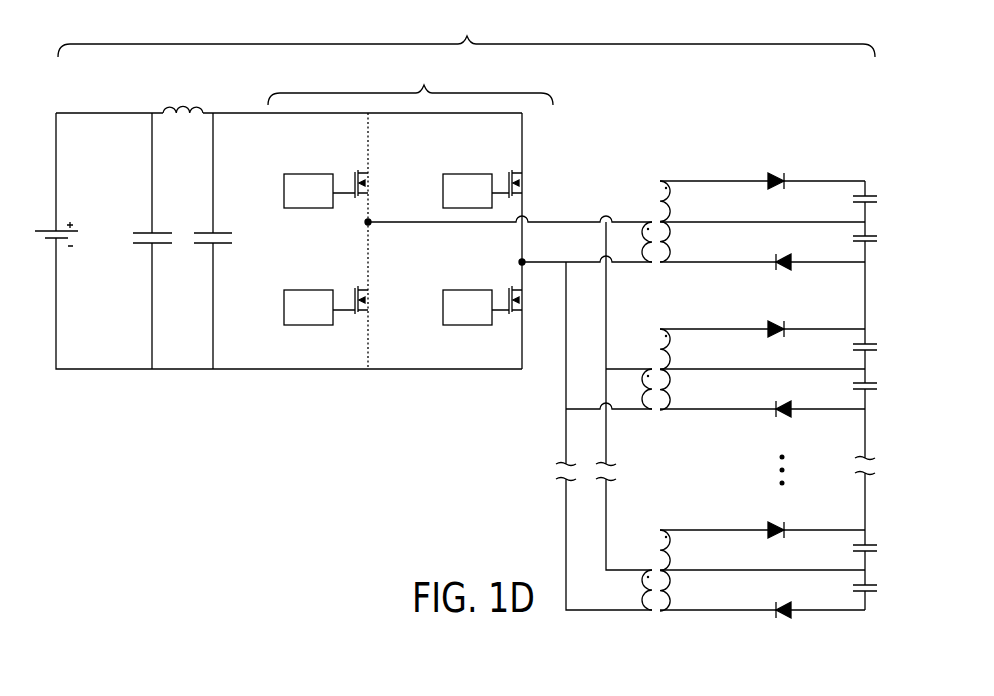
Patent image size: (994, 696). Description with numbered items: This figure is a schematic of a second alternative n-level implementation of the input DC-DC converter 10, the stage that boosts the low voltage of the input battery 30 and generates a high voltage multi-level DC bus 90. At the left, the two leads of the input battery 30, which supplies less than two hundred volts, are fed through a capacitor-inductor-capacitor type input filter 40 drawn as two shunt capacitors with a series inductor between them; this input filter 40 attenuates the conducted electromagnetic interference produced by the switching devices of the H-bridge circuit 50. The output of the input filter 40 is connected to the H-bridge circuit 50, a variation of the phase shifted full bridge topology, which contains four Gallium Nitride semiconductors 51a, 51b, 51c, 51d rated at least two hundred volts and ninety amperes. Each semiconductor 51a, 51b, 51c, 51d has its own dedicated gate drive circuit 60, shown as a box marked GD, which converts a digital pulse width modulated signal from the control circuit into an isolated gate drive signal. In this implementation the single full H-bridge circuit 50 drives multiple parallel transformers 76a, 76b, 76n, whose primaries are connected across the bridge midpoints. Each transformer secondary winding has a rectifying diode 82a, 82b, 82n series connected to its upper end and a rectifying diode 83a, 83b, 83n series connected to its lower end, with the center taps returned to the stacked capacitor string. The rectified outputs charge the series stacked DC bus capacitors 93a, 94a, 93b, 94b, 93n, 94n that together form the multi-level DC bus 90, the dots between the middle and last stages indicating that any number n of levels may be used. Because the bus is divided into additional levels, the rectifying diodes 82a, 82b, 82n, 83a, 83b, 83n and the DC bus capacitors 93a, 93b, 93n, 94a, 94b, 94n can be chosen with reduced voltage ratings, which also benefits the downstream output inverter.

The input DC-DC converter 10 is at (466, 29).
The input battery 30 is at (43, 230).
The input filter 40 is at (194, 98).
The H-bridge circuit 50 is at (410, 78).
The gate drive circuit 60 is at (300, 174).
The semiconductor 51a is at (364, 187).
The semiconductor 51b is at (518, 187).
The semiconductor 51c is at (364, 304).
The semiconductor 51d is at (518, 304).
The parallel transformer 76a is at (652, 178).
The parallel transformer 76b is at (652, 340).
The parallel transformer 76n is at (652, 542).
The rectifying diode 82a is at (772, 176).
The rectifying diode 82b is at (772, 324).
The rectifying diode 82n is at (772, 525).
The rectifying diode 83a is at (788, 268).
The rectifying diode 83b is at (788, 415).
The rectifying diode 83n is at (778, 606).
The multi-level DC bus 90 is at (863, 165).
The DC bus capacitor 93a is at (878, 200).
The DC bus capacitor 93b is at (878, 347).
The DC bus capacitor 93n is at (878, 548).
The DC bus capacitor 94a is at (878, 239).
The DC bus capacitor 94b is at (878, 386).
The DC bus capacitor 94n is at (878, 588).